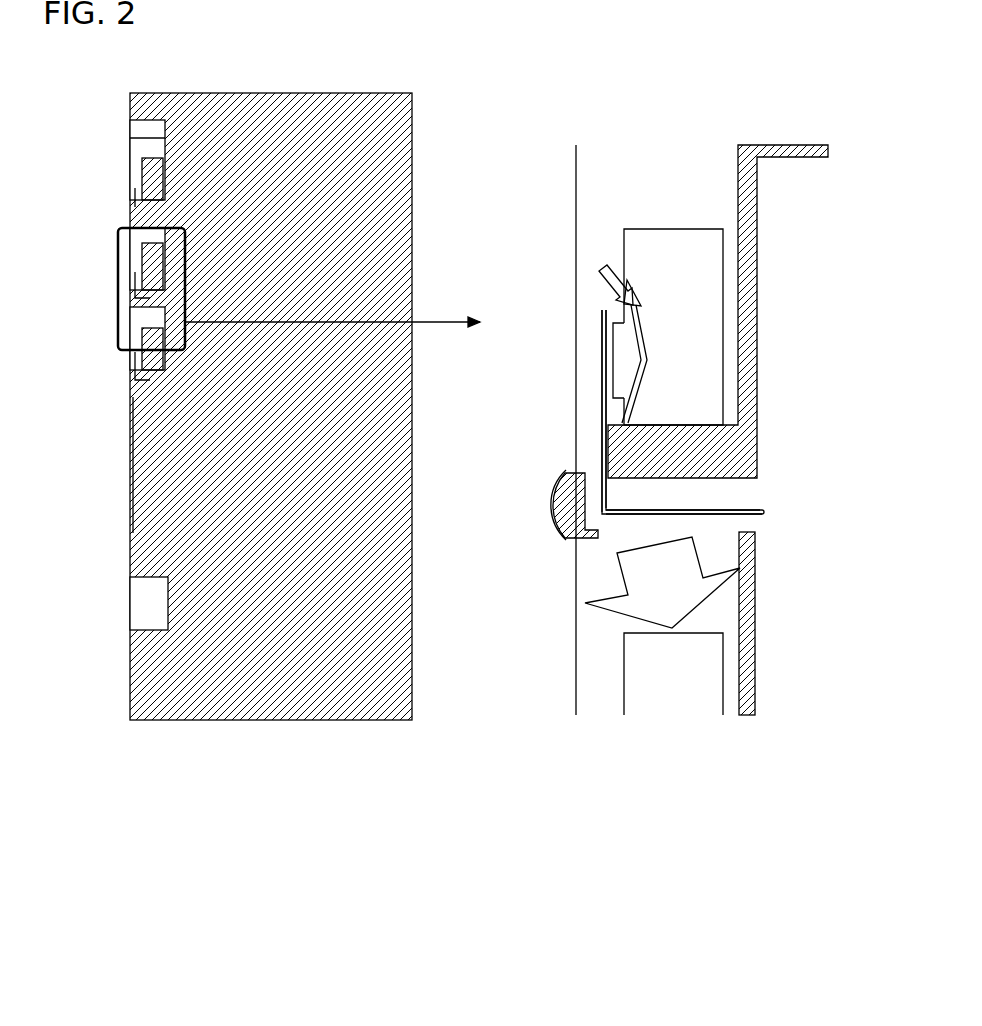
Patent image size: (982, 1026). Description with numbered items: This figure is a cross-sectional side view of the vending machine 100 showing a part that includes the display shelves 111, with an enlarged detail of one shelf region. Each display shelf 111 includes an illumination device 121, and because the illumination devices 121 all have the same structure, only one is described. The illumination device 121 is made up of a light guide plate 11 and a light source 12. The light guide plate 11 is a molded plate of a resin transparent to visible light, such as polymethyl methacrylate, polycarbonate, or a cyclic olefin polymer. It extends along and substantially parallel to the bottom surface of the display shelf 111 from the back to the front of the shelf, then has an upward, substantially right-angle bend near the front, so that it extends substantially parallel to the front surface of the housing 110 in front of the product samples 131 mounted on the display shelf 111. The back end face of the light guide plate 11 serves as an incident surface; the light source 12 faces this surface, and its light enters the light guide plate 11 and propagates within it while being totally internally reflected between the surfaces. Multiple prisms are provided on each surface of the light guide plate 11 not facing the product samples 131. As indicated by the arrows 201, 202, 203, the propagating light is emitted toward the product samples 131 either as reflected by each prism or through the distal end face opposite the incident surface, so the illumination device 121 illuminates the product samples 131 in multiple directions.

The vending machine 100 is at (465, 473).
The housing 110 is at (397, 620).
The display shelf 111 is at (128, 213).
The illumination device 121 is at (135, 198).
The product sample 131 is at (678, 248).
The light guide plate 11 is at (602, 405).
The light source 12 is at (767, 516).
The arrow 201 is at (617, 268).
The arrow 202 is at (626, 361).
The arrow 203 is at (637, 567).